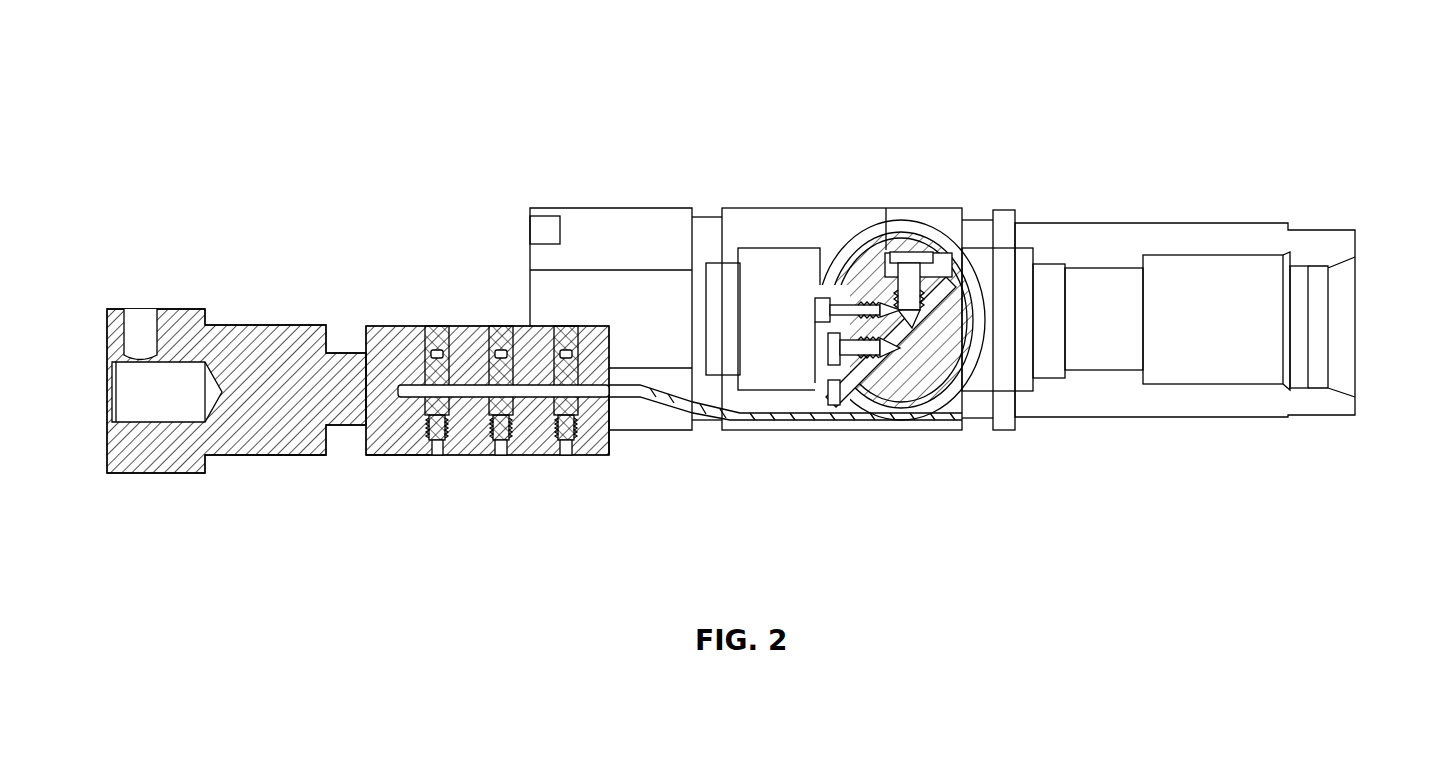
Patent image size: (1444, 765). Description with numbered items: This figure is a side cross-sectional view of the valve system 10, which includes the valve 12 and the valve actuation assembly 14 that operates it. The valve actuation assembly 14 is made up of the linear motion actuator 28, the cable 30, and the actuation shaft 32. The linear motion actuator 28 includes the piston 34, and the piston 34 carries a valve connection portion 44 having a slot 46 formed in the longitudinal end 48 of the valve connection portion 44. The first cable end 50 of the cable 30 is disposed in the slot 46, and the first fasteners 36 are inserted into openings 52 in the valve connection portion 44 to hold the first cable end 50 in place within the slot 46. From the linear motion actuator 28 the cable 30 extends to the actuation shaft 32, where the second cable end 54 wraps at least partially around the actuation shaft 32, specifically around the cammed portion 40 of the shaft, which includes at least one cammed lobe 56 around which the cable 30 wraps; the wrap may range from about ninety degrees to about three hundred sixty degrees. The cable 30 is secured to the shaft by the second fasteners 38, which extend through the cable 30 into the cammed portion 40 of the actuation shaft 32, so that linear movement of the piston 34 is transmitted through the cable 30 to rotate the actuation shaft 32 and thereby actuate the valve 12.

The valve system 10 is at (1365, 73).
The valve 12 is at (1265, 195).
The valve actuation assembly 14 is at (498, 386).
The linear motion actuator 28 is at (272, 318).
The cable 30 is at (706, 415).
The actuation shaft 32 is at (897, 400).
The piston 34 is at (290, 455).
The first fasteners 36 is at (452, 445).
The second fasteners 38 is at (905, 255).
The cammed portion 40 is at (907, 408).
The valve connection portion 44 is at (400, 455).
The slot 46 is at (398, 390).
The longitudinal end 48 is at (612, 452).
The first cable end 50 is at (466, 385).
The openings 52 is at (428, 326).
The second cable end 54 is at (862, 270).
The cammed lobe 56 is at (940, 272).